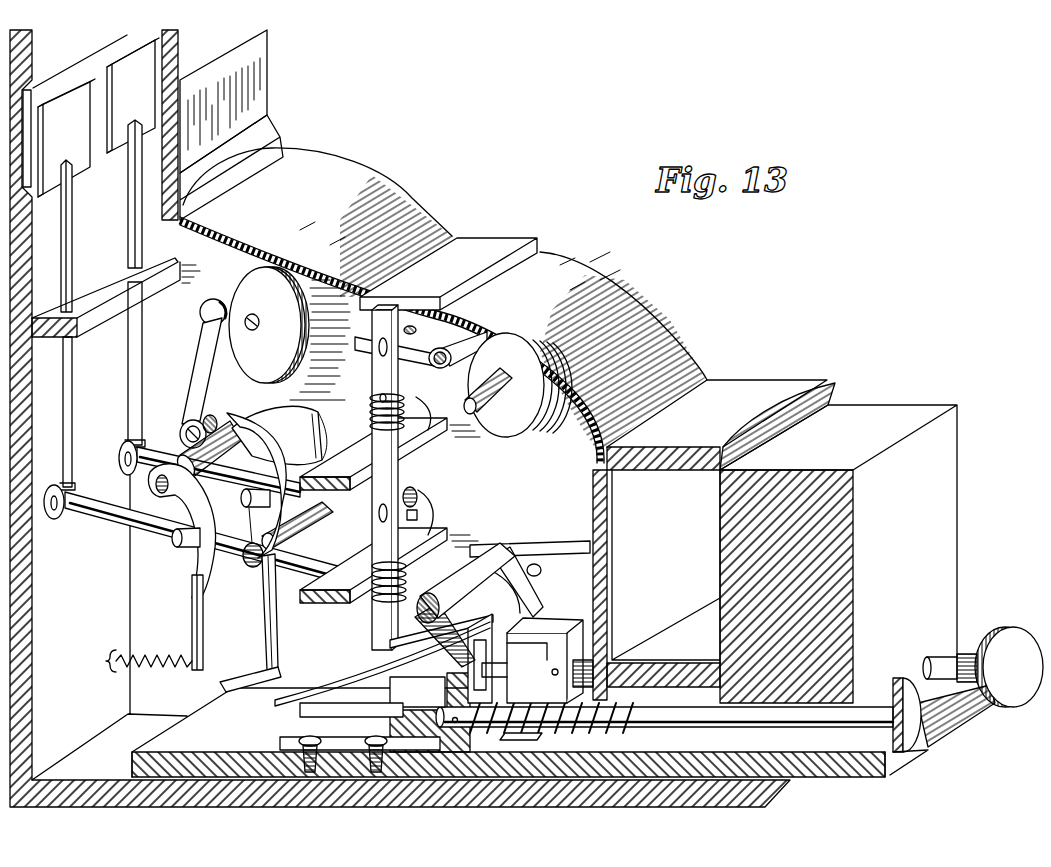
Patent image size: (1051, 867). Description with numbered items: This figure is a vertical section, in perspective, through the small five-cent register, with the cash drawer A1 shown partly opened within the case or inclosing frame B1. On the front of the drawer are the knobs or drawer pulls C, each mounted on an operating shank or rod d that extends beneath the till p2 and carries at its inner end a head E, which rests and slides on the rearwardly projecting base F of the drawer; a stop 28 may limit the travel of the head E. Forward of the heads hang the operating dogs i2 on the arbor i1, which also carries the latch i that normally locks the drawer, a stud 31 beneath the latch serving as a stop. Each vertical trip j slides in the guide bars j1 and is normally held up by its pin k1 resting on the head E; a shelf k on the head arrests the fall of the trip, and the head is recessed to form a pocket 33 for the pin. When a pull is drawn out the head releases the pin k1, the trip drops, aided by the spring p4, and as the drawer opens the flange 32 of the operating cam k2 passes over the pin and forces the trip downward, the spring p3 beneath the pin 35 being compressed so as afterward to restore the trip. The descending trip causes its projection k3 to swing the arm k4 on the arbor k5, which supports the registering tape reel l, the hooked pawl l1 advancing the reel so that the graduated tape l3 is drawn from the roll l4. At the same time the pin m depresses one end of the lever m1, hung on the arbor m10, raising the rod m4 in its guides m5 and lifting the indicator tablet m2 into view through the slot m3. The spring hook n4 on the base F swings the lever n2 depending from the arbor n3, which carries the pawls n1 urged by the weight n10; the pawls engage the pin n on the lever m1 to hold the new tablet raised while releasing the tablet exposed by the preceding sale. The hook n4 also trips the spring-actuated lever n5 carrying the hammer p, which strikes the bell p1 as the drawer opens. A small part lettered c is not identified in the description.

The indicator tablet m2 is at (98, 114).
The slots m3 is at (231, 125).
The rod m4 is at (133, 222).
The guides m5 is at (116, 297).
The lever m1 is at (350, 514).
The arbor m10 is at (248, 566).
The pin m is at (413, 497).
The pin n is at (175, 543).
The pawls or hooks n1 is at (217, 506).
The lever n2 is at (266, 634).
The arbor n3 is at (222, 437).
The spring hook n4 is at (248, 681).
The spring actuated lever n5 is at (192, 621).
The weight n10 is at (279, 435).
The hammer p is at (203, 319).
The bell p1 is at (289, 333).
The till p2 is at (710, 540).
The springs p3 is at (370, 412).
The spring p4 is at (407, 578).
The pins 35 is at (381, 395).
The trip j is at (385, 477).
The guide bars j1 is at (391, 510).
The shelf k is at (488, 668).
The pin k1 is at (318, 710).
The operating cam k2 is at (352, 721).
The driving projection k3 is at (419, 329).
The arm k4 is at (412, 352).
The arbor k5 is at (468, 405).
The tape reel l is at (506, 385).
The hooked pawl l1 is at (458, 350).
The tape l3 is at (542, 422).
The roll l4 is at (573, 428).
The case B1 is at (445, 301).
The cash drawer A1 is at (838, 543).
The latch i is at (577, 548).
The arbor i1 is at (478, 582).
The operating dogs i2 is at (524, 582).
The stud 31 is at (540, 569).
The operating flange 32 is at (362, 668).
The pocket 33 is at (512, 662).
The stop 28 is at (541, 738).
The head E is at (532, 660).
The base F is at (447, 418).
The operating shank d is at (938, 668).
The drawer pull C is at (1005, 630).
The bracket c is at (912, 745).